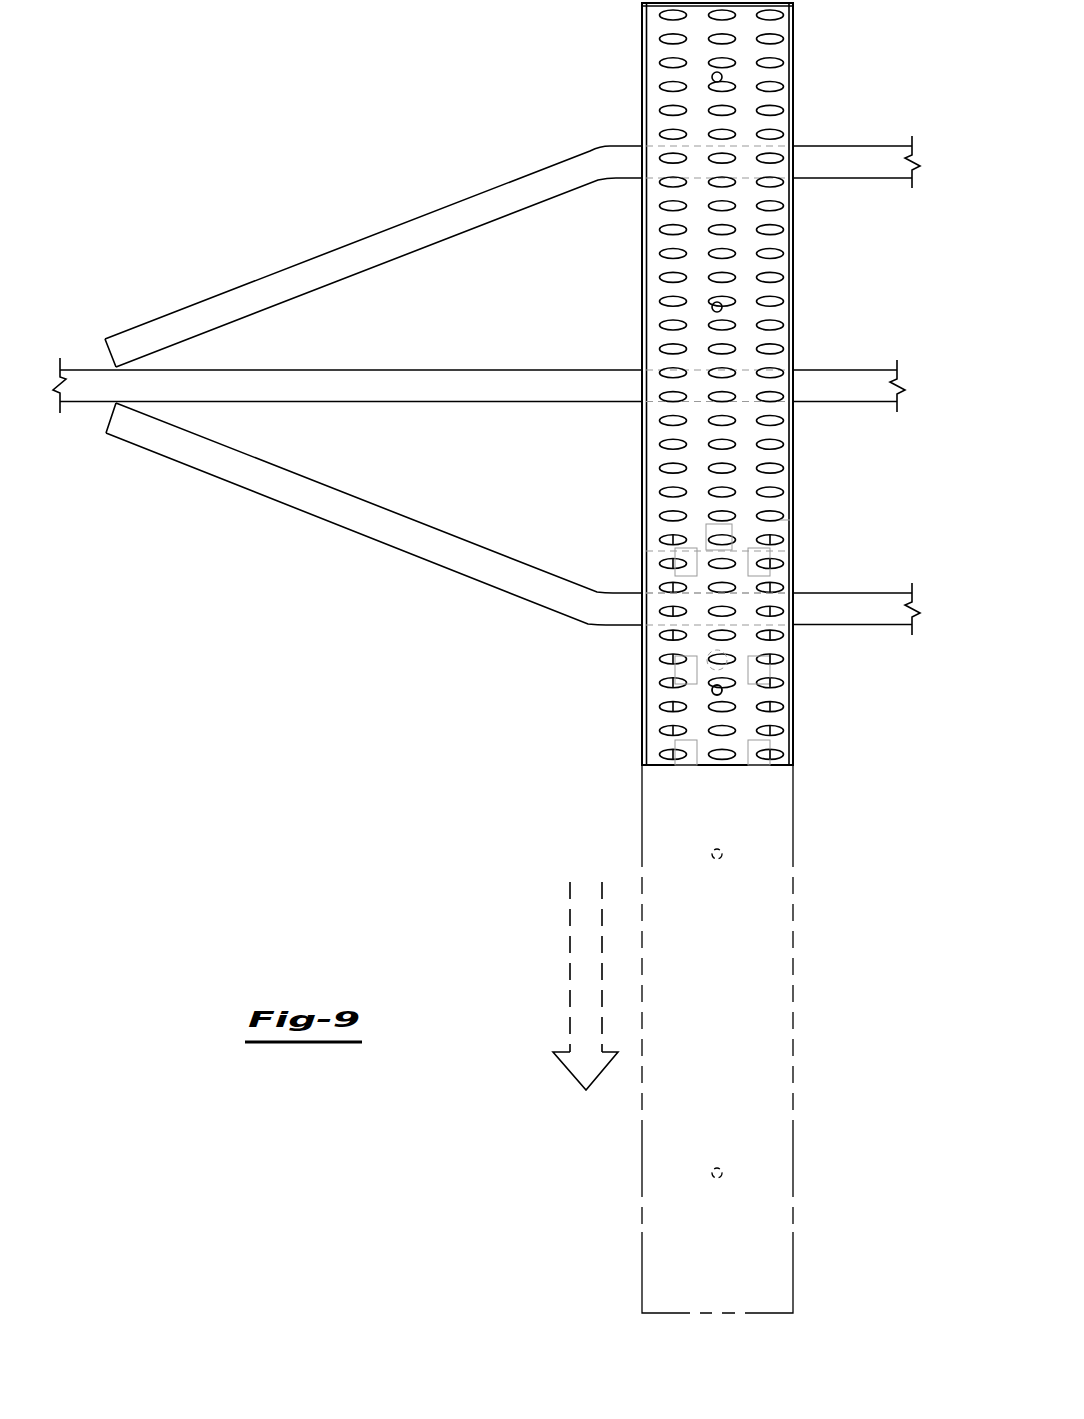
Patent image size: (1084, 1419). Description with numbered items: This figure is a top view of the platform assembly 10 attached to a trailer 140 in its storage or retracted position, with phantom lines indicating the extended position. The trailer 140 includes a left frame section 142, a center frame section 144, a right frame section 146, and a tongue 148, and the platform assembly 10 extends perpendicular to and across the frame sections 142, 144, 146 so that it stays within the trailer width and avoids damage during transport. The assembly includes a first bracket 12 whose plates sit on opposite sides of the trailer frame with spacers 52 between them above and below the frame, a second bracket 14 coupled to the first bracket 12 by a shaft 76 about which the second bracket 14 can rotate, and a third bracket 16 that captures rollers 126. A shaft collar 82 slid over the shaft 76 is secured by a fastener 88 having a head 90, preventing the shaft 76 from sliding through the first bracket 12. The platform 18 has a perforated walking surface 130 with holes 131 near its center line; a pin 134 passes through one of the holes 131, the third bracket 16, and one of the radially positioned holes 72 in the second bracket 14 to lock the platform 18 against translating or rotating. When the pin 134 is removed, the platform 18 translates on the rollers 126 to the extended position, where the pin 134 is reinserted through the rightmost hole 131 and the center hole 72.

The platform assembly 10 is at (590, 83).
The first bracket 12 is at (812, 545).
The second bracket 14 is at (855, 692).
The third bracket 16 is at (815, 765).
The platform 18 is at (628, 290).
The spacers 52 is at (745, 598).
The holes 72 is at (695, 695).
The shaft 76 is at (787, 520).
The shaft collar 82 is at (703, 575).
The fastener 88 is at (745, 580).
The head 90 is at (745, 578).
The rollers 126 is at (685, 557).
The walking surface 130 is at (713, 30).
The holes 131 is at (712, 78).
The pin 134 is at (715, 694).
The trailer 140 is at (290, 547).
The left frame section 142 is at (878, 600).
The center frame section 144 is at (877, 378).
The right frame section 146 is at (880, 152).
The tongue 148 is at (86, 404).